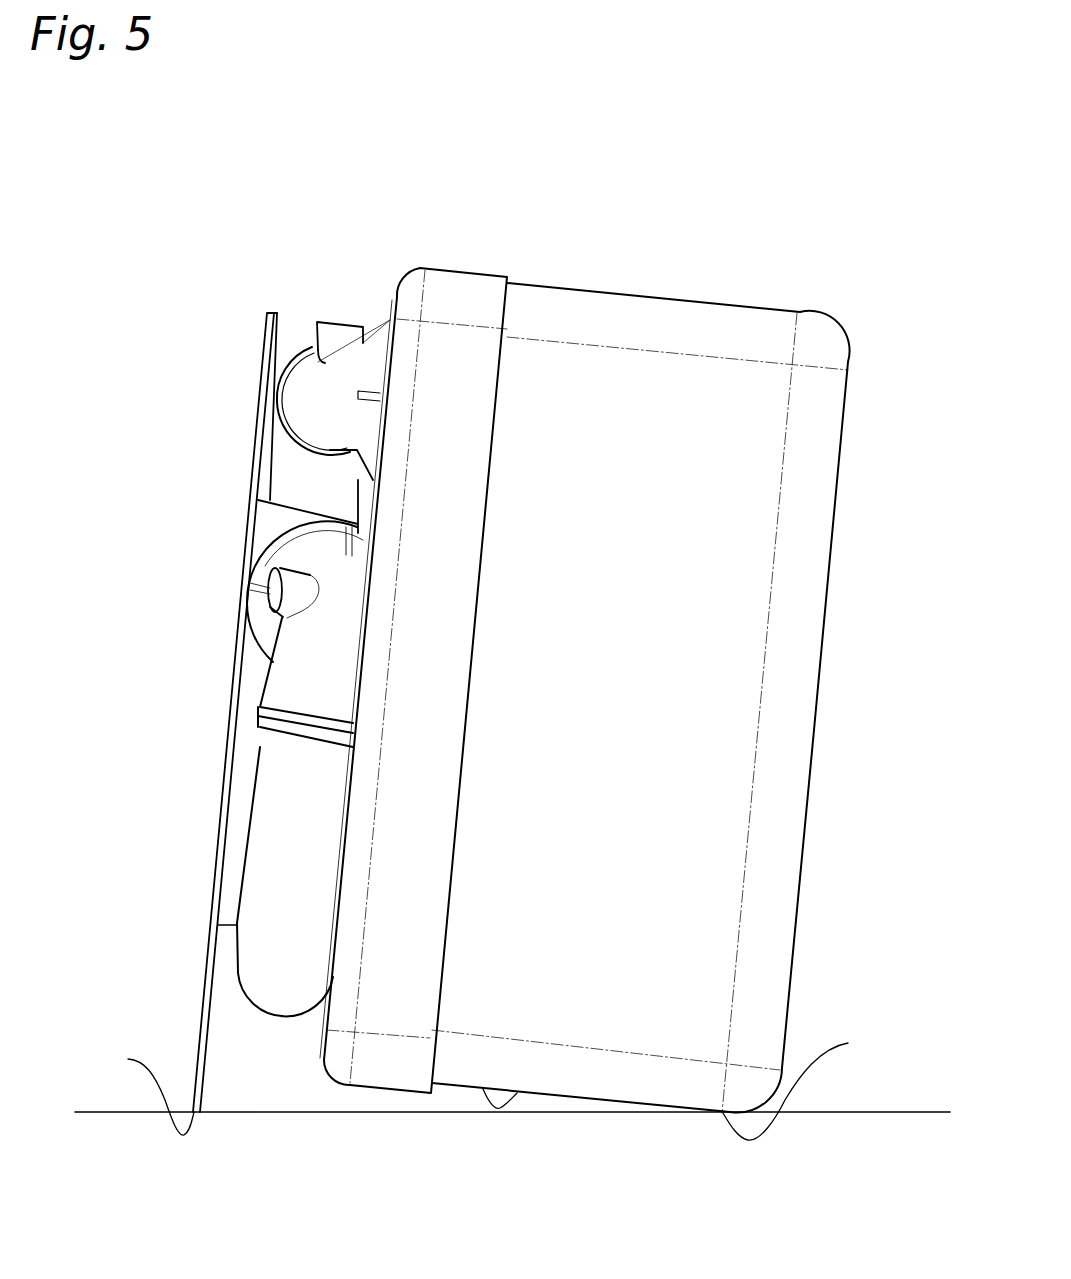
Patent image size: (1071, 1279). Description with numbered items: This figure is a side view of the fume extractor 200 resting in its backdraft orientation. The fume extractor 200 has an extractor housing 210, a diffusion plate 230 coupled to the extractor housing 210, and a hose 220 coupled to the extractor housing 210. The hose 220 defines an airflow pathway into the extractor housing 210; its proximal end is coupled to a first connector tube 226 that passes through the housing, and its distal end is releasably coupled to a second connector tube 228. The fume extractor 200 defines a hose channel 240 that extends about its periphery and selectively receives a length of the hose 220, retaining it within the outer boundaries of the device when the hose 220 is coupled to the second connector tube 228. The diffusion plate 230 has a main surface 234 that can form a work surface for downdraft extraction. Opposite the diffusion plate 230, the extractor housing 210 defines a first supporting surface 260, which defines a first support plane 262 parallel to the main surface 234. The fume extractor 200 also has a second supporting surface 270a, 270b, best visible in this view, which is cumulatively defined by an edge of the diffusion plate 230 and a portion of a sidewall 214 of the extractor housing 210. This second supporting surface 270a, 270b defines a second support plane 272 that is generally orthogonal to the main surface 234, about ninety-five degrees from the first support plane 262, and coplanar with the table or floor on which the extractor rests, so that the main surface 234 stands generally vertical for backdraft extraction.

The fume extractor 200 is at (208, 215).
The extractor housing 210 is at (600, 266).
The sidewall 214 is at (517, 1093).
The hose 220 is at (237, 973).
The first connector tube 226 is at (345, 375).
The second connector tube 228 is at (317, 667).
The diffusion plate 230 is at (248, 398).
The main surface 234 is at (258, 456).
The hose channel 240 is at (303, 310).
The first supporting surface 260 is at (802, 858).
The first support plane 262 is at (810, 747).
The second supporting surface 270a is at (132, 1092).
The second supporting surface 270b is at (814, 1087).
The second support plane 272 is at (862, 1112).